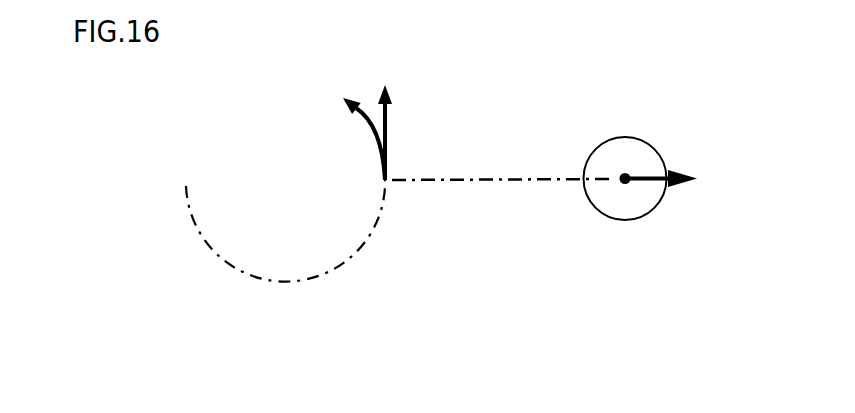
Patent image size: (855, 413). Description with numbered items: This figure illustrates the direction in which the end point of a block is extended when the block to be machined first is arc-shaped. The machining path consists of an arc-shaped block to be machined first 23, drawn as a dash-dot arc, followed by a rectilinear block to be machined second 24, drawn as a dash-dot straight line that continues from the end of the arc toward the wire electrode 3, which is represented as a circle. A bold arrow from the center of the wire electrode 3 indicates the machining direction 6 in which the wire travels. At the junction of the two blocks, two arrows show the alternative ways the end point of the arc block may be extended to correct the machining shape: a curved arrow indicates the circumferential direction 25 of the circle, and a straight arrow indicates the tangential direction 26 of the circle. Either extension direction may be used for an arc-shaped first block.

The wire electrode 3 is at (615, 135).
The machining direction 6 is at (640, 182).
The block to be machined first (arc) 23 is at (235, 267).
The block to be machined second (straight line) 24 is at (475, 180).
The circumferential direction 25 is at (368, 133).
The tangential direction 26 is at (388, 130).